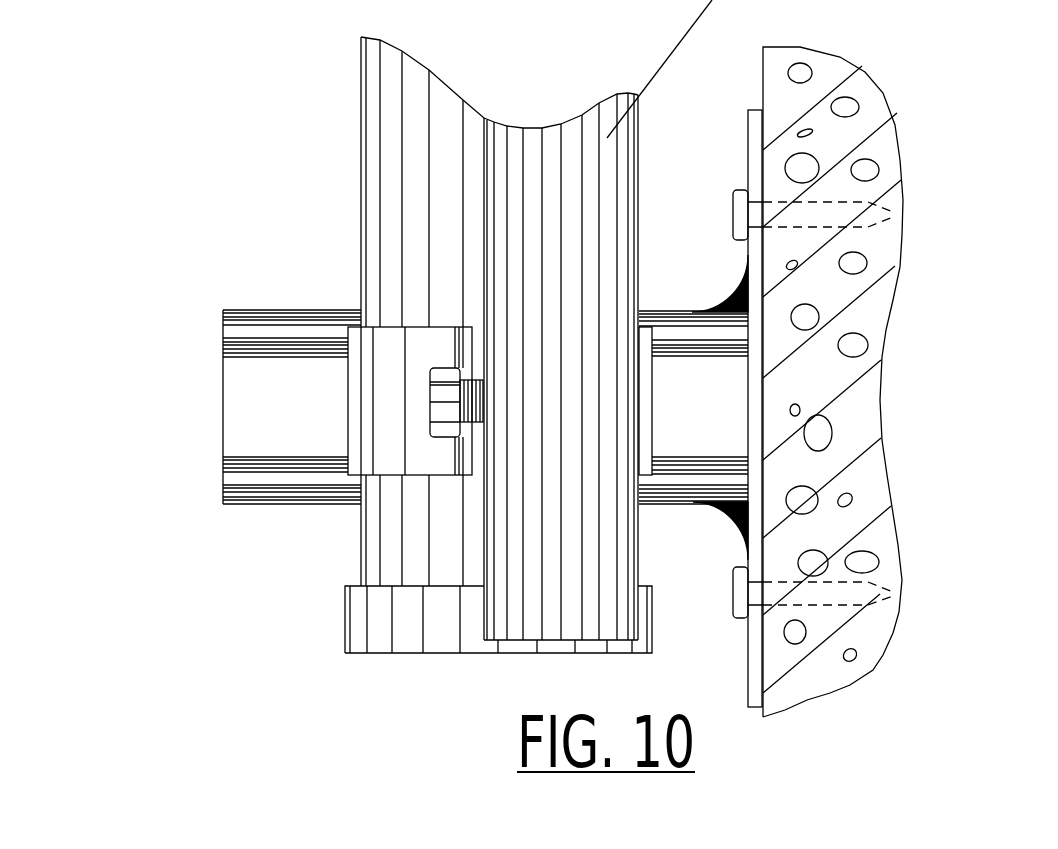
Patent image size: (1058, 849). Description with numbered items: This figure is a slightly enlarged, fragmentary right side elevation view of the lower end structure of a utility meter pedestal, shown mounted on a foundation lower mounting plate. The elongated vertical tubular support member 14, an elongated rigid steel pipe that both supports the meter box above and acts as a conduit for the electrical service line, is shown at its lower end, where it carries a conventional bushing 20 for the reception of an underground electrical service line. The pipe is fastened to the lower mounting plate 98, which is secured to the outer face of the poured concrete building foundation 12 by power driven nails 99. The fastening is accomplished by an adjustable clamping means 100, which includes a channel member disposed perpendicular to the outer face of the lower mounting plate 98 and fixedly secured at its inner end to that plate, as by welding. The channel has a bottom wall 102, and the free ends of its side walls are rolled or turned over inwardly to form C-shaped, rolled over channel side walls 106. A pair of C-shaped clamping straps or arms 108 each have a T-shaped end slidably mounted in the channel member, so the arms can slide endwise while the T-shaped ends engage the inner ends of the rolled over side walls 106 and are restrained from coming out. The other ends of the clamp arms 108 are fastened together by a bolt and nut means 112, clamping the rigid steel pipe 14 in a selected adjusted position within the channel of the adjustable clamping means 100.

The building foundation 12 is at (792, 105).
The elongated vertical tubular support member 14 is at (392, 137).
The bushing 20 is at (405, 622).
The lower mounting plate 98 is at (762, 140).
The power driven nails 99 is at (742, 217).
The adjustable clamping means 100 is at (258, 265).
The bottom wall 102 is at (252, 378).
The C-shaped rolled over channel side walls 106 is at (293, 472).
The C-shaped clamping straps or arms 108 is at (397, 378).
The bolt and nut means 112 is at (443, 397).